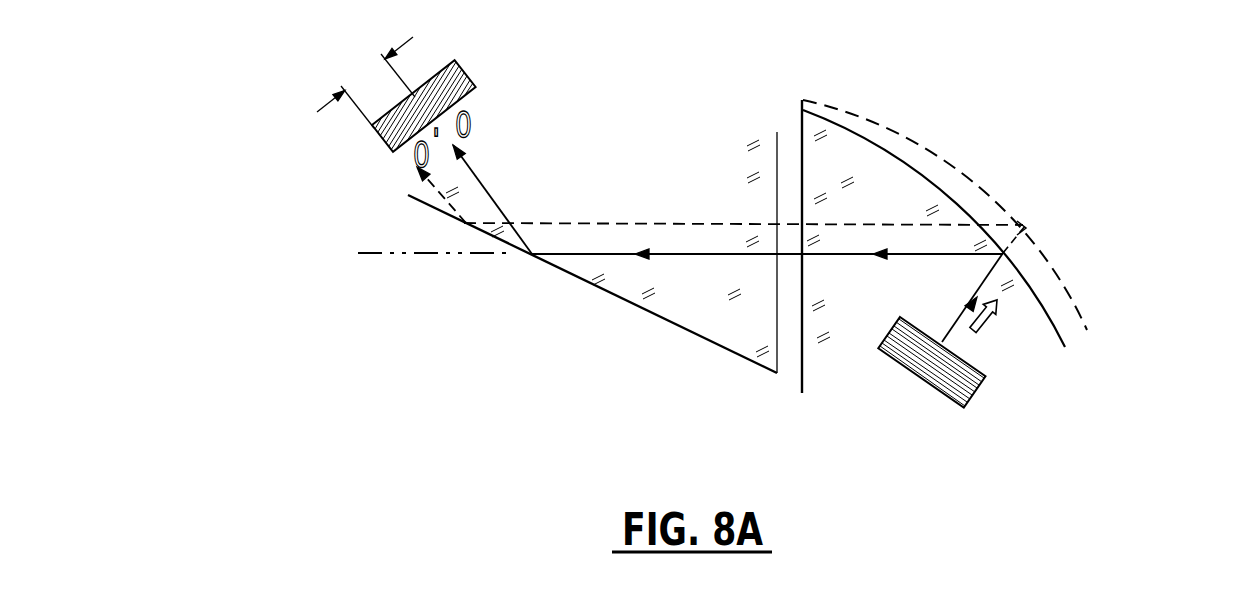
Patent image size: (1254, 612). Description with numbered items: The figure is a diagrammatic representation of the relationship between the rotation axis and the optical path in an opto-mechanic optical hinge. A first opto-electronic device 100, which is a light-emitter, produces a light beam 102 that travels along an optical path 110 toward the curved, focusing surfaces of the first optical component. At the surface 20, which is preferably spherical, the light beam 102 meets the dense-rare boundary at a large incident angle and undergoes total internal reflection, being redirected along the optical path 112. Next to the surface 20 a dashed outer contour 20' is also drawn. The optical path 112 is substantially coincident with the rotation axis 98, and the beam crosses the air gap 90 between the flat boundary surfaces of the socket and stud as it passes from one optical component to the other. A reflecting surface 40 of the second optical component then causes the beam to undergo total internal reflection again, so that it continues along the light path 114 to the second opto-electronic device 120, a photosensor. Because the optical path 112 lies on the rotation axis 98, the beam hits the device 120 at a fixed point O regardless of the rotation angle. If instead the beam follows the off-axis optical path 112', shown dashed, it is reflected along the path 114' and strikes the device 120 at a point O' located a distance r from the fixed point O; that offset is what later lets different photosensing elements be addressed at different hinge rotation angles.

The surface 20 is at (934, 213).
The outer surface of window 20' is at (1015, 215).
The reflecting surface 40 is at (608, 293).
The air gap 90 is at (789, 292).
The rotation axis 98 is at (435, 253).
The first opto-electronic device 100 is at (957, 387).
The light beam 102 is at (992, 322).
The optical path 110 is at (958, 328).
The optical path 112 is at (686, 311).
The off-axis optical path 112' is at (721, 135).
The light path 114 is at (529, 147).
The axis of reflected light 114' is at (625, 239).
The second opto-electronic device 120 is at (450, 85).